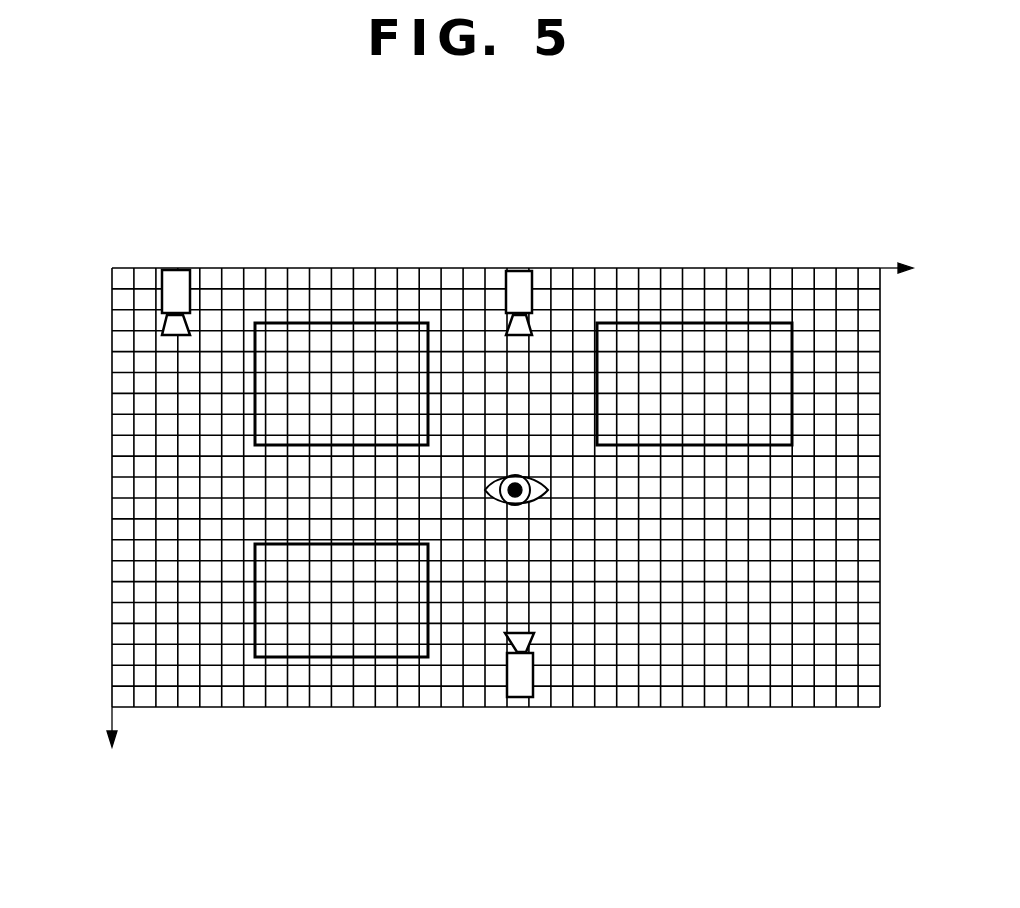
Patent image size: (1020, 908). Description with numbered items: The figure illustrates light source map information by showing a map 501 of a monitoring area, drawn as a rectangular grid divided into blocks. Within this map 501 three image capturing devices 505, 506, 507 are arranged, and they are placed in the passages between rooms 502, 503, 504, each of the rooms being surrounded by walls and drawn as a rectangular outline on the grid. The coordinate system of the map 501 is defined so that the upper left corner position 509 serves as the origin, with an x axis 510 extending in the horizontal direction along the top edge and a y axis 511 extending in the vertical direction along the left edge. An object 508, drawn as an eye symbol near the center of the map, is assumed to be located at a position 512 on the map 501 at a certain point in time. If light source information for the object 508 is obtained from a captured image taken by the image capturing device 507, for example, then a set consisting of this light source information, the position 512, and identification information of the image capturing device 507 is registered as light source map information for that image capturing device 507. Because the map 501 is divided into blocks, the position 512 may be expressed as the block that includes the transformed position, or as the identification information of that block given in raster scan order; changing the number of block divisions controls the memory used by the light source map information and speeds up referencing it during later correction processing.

The map 501 is at (300, 268).
The room 502 is at (385, 322).
The room 503 is at (757, 322).
The room 504 is at (342, 660).
The image capturing device 505 is at (178, 270).
The image capturing device 506 is at (520, 270).
The image capturing device 507 is at (518, 698).
The object 508 is at (537, 477).
The upper left corner position 509 is at (112, 270).
The x axis 510 is at (848, 268).
The y axis 511 is at (112, 698).
The position 512 is at (513, 505).